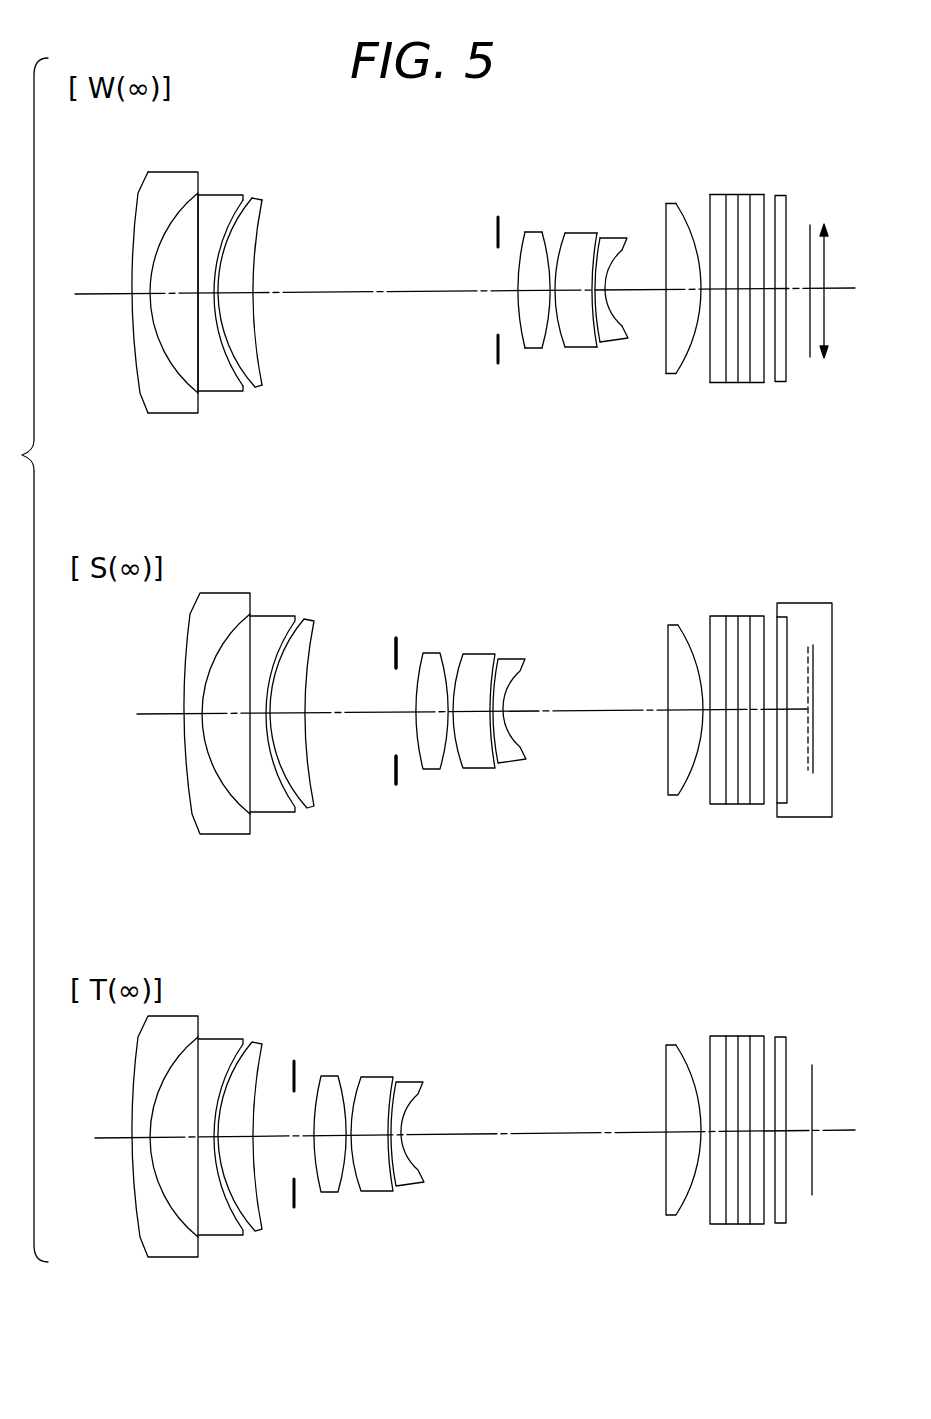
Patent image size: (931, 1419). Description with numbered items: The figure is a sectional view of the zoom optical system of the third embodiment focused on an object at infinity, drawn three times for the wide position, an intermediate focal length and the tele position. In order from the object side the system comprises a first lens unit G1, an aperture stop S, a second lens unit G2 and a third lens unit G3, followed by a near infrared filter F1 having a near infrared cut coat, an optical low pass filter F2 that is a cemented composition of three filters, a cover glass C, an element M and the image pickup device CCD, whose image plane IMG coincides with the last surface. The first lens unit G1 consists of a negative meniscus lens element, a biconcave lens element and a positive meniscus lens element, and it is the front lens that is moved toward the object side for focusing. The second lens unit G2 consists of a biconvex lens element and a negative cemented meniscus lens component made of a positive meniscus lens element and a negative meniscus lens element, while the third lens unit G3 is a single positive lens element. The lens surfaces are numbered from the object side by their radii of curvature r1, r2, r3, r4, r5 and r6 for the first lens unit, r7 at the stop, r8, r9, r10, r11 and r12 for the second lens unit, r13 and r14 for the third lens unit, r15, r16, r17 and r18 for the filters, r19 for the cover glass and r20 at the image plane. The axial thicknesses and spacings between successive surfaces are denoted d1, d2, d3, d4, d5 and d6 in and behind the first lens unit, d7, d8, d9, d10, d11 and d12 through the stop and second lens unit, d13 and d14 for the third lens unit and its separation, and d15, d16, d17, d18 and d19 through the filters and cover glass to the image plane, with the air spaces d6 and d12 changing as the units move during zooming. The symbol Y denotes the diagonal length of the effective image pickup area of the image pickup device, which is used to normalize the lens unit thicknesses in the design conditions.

The radius of curvature r1 is at (139, 194).
The radius of curvature r2 is at (172, 217).
The radius of curvature r3 is at (207, 217).
The radius of curvature r4 is at (231, 217).
The radius of curvature r5 is at (250, 197).
The radius of curvature r6 is at (262, 216).
The radius of curvature r7 is at (486, 232).
The radius of curvature r8 is at (519, 243).
The radius of curvature r9 is at (548, 232).
The radius of curvature r10 is at (566, 232).
The radius of curvature r11 is at (594, 232).
The radius of curvature r12 is at (623, 240).
The radius of curvature r13 is at (657, 222).
The radius of curvature r14 is at (685, 203).
The radius of curvature r15 is at (707, 203).
The radius of curvature r16 is at (722, 203).
The radius of curvature r17 is at (755, 198).
The radius of curvature r18 is at (762, 200).
The radius of curvature r19 is at (788, 203).
The radius of curvature r20 is at (810, 223).
The thickness d1 is at (141, 296).
The thickness d2 is at (174, 296).
The thickness d3 is at (215, 296).
The thickness d4 is at (218, 292).
The thickness d5 is at (234, 297).
The thickness d6 is at (363, 297).
The thickness d7 is at (512, 292).
The thickness d8 is at (522, 331).
The thickness d9 is at (550, 294).
The thickness d10 is at (572, 294).
The thickness d11 is at (600, 294).
The thickness d12 is at (636, 296).
The thickness d13 is at (680, 291).
The thickness d14 is at (705, 291).
The thickness d15 is at (720, 291).
The thickness d16 is at (753, 291).
The thickness d17 is at (768, 291).
The thickness d18 is at (783, 291).
The thickness d19 is at (800, 291).
The diagonal length of effective image pickup area Y is at (832, 291).
The first lens unit G1 is at (322, 839).
The second lens unit G2 is at (533, 777).
The third lens unit G3 is at (672, 795).
The aperture stop S is at (396, 774).
The near infrared filter F1 is at (720, 804).
The optical low pass filter F2 is at (767, 816).
The cover glass C is at (773, 633).
The microlens M is at (805, 757).
The image pickup device CCD is at (812, 817).
The image plane IMG is at (808, 647).